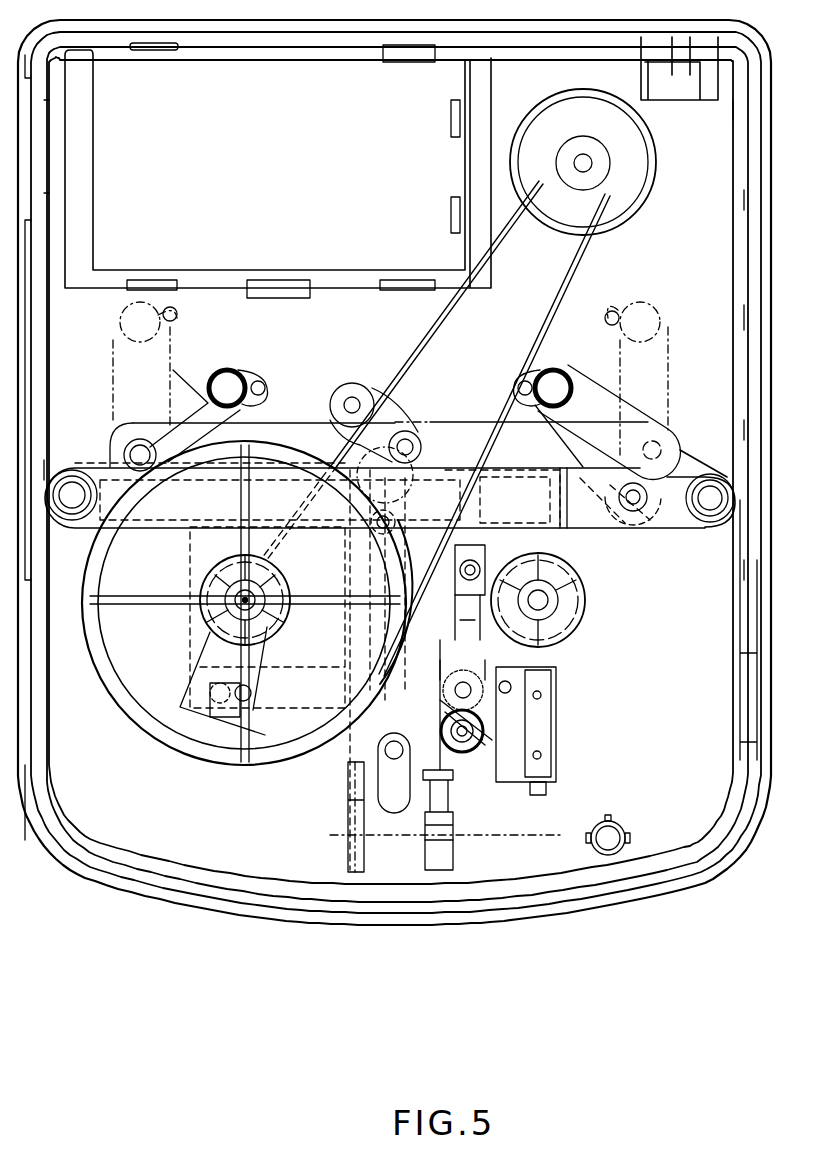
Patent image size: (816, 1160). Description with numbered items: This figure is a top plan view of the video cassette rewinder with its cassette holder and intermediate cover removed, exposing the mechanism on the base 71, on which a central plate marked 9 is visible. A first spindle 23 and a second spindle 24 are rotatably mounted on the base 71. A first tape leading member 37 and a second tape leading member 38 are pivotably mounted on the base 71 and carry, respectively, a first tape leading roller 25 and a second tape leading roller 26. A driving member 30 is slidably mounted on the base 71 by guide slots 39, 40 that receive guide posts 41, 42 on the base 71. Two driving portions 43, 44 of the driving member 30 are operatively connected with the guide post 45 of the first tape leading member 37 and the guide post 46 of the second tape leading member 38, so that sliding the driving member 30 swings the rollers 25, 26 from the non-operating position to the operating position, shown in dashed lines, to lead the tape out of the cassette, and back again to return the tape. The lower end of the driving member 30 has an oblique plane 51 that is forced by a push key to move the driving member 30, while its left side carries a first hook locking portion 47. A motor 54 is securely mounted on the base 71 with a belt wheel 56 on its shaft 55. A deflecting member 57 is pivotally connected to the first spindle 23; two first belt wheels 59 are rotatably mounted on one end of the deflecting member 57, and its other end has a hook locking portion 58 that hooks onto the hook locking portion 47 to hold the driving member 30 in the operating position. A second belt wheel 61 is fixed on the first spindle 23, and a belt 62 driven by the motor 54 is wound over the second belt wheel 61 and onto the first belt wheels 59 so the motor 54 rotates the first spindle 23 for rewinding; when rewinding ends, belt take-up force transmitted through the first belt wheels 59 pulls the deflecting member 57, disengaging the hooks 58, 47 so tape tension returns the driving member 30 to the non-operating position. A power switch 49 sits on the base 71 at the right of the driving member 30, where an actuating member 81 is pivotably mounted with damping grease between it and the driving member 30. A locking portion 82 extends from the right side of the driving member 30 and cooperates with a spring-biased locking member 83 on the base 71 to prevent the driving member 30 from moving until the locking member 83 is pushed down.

The support bar 9 is at (512, 495).
The first spindle 23 is at (218, 563).
The second spindle 24 is at (587, 620).
The first tape leading roller 25 is at (228, 370).
The second tape leading roller 26 is at (668, 298).
The driving member 30 is at (598, 533).
The first tape leading member 37 is at (250, 383).
The second tape leading member 38 is at (568, 372).
The guide slot 39 is at (405, 790).
The guide slot 40 is at (408, 623).
The guide post 41 is at (398, 589).
The guide post 42 is at (400, 738).
The driving portion 43 is at (82, 540).
The driving portion 44 is at (655, 505).
The guide post 45 is at (150, 472).
The guide post 46 is at (637, 512).
The first hook locking portion 47 is at (245, 675).
The power switch 49 is at (556, 722).
The oblique plane 51 is at (450, 862).
The motor 54 is at (656, 192).
The shaft 55 is at (593, 158).
The belt wheel 56 is at (565, 195).
The deflecting member 57 is at (317, 433).
The hook locking portion 58 is at (135, 730).
The first belt wheels 59 is at (358, 383).
The second belt wheel 61 is at (88, 640).
The belt 62 is at (452, 318).
The base 71 is at (135, 893).
The actuating member 81 is at (485, 752).
The locking portion 82 is at (518, 543).
The locking member 83 is at (466, 585).